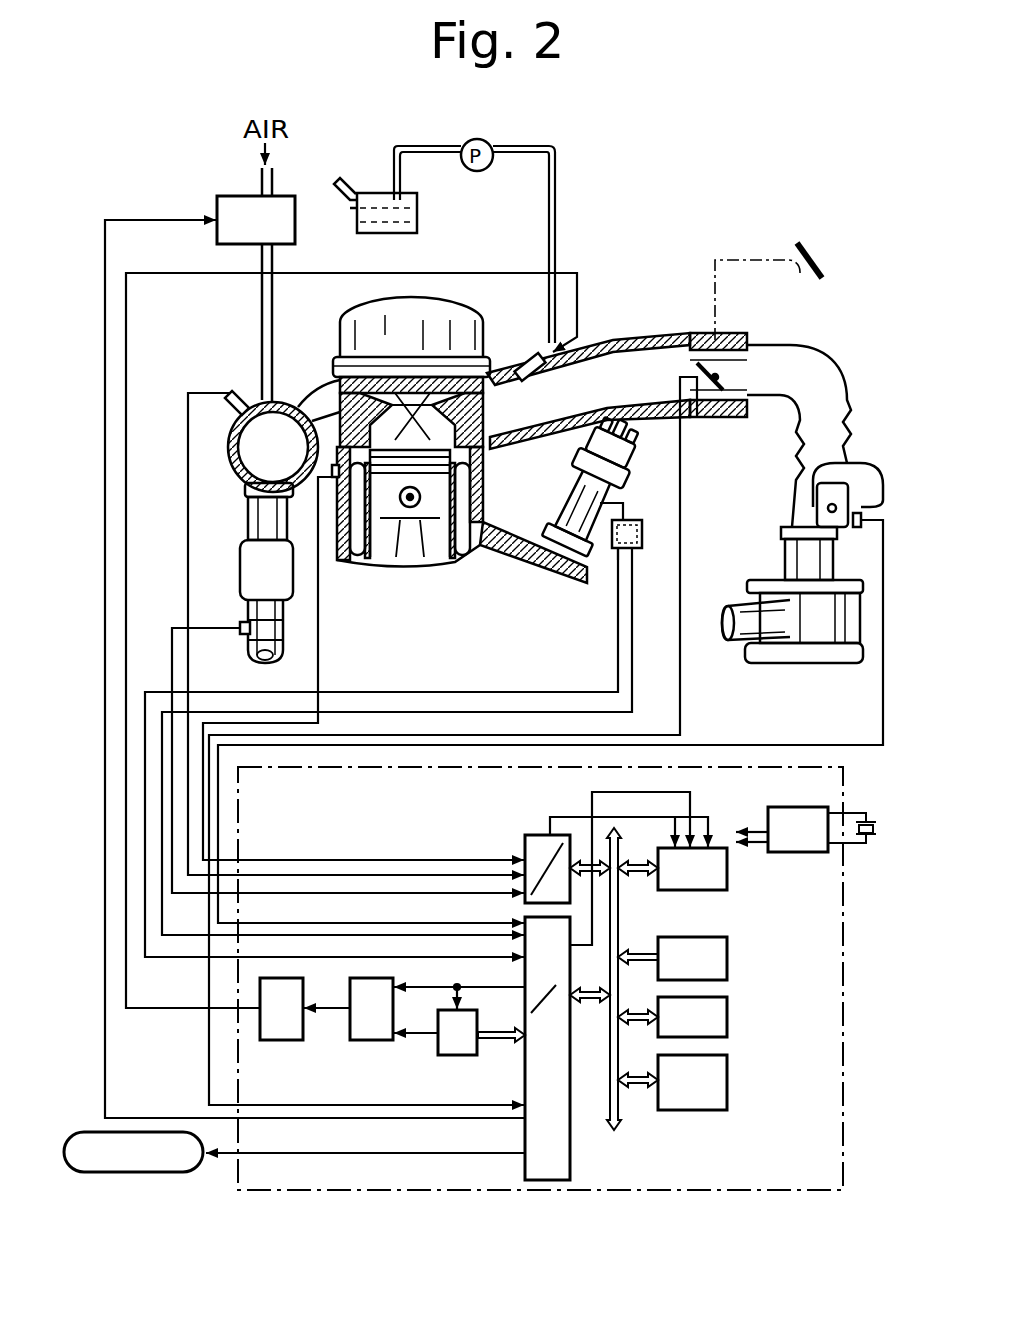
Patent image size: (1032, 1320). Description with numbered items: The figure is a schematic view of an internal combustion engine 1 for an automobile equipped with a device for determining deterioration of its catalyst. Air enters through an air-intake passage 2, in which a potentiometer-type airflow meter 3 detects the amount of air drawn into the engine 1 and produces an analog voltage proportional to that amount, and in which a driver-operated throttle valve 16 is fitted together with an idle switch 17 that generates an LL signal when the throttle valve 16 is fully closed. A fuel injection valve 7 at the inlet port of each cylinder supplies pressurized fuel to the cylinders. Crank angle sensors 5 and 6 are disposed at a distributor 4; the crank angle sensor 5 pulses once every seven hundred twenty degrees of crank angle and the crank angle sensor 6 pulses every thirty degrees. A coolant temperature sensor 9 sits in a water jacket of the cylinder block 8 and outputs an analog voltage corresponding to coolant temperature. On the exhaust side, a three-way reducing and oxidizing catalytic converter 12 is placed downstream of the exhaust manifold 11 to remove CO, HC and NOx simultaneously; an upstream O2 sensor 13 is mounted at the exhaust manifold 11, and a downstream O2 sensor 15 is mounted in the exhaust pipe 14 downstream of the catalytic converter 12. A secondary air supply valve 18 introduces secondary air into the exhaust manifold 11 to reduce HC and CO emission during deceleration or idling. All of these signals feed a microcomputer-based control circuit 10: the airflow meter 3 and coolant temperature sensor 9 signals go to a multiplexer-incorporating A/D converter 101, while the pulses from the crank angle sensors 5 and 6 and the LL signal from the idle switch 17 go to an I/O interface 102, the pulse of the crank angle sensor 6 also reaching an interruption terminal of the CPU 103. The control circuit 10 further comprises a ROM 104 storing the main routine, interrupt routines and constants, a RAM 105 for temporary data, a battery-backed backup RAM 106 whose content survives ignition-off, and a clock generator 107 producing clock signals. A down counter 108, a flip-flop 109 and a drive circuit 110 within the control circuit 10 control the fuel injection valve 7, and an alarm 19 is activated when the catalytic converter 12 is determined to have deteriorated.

The internal combustion engine 1 is at (481, 321).
The air-intake passage 2 is at (726, 344).
The airflow meter 3 is at (870, 480).
The distributor 4 is at (558, 476).
The crank angle sensor 5 is at (611, 550).
The crank angle sensor 6 is at (645, 550).
The fuel injection valve 7 is at (530, 352).
The cylinder block 8 is at (335, 548).
The coolant temperature sensor 9 is at (331, 478).
The control circuit 10 is at (843, 990).
The exhaust manifold 11 is at (280, 385).
The catalytic converter 12 is at (240, 565).
The upstream O2 sensor 13 is at (235, 392).
The exhaust pipe 14 is at (284, 632).
The downstream O2 sensor 15 is at (243, 624).
The throttle valve 16 is at (715, 410).
The idle switch 17 is at (697, 420).
The secondary air supply valve 18 is at (295, 196).
The alarm 19 is at (86, 1132).
The A/D converter 101 is at (533, 834).
The I/O interface 102 is at (525, 916).
The CPU 103 is at (728, 871).
The ROM 104 is at (728, 958).
The RAM 105 is at (728, 1016).
The backup RAM 106 is at (728, 1080).
The clock generator 107 is at (805, 858).
The down counter 108 is at (458, 1057).
The flip-flop 109 is at (372, 1042).
The drive circuit 110 is at (285, 1042).